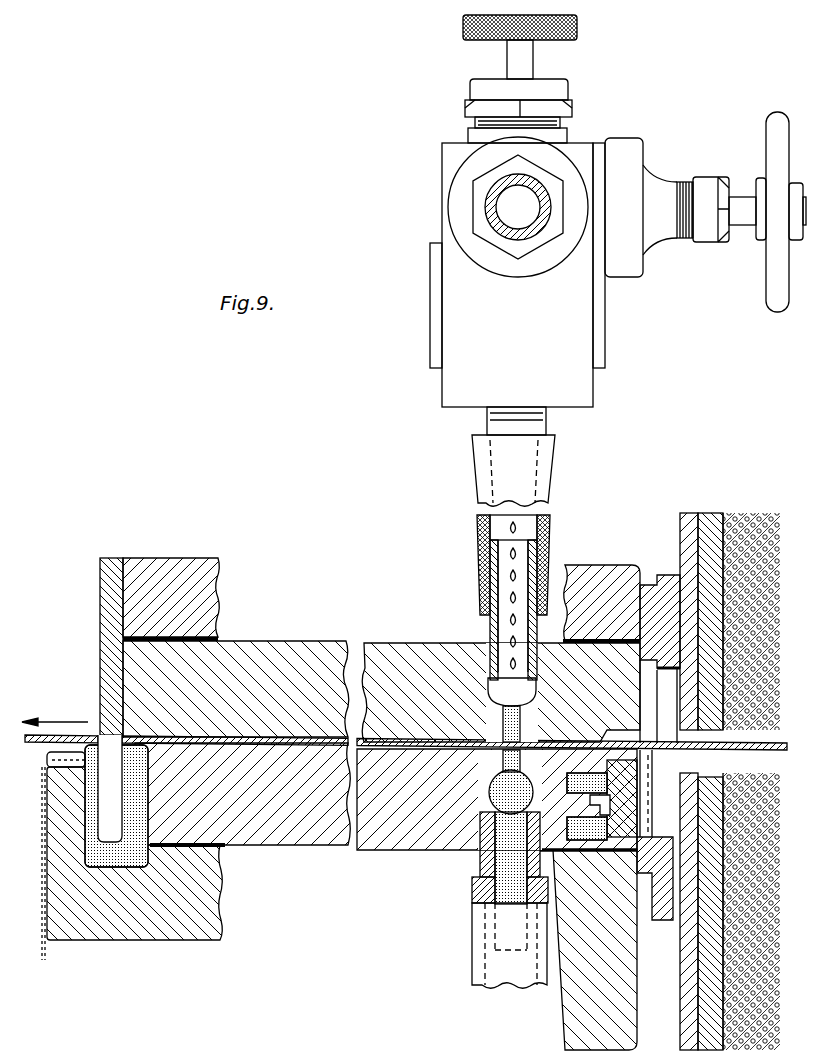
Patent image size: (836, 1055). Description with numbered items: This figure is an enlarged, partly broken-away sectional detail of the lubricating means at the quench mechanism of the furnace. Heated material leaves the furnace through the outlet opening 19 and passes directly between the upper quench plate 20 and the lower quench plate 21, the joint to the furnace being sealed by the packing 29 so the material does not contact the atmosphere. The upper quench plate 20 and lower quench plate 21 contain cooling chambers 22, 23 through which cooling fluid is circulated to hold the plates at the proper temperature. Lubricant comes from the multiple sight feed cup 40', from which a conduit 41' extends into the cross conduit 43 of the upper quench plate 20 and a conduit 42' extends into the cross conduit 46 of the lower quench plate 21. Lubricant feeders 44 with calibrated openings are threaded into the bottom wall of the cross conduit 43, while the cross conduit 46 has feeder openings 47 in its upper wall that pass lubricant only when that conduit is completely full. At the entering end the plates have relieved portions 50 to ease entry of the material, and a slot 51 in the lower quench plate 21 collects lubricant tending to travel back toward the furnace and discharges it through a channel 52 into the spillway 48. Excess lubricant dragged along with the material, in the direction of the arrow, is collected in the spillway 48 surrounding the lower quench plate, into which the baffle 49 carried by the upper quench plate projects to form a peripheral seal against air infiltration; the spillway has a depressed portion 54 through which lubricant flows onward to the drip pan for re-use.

The outlet opening 19 is at (768, 773).
The upper quench plate 20 is at (282, 652).
The lower quench plate 21 is at (300, 832).
The cooling chamber 22 is at (218, 577).
The cooling chamber 23 is at (220, 920).
The packing 29 is at (648, 583).
The multiple sight feed cup 40' is at (618, 225).
The conduit 41' is at (535, 470).
The conduit 42' is at (481, 945).
The cross conduit 43 is at (527, 693).
The lubricant feeder 44 is at (520, 722).
The cross conduit 46 is at (468, 822).
The feeder opening 47 is at (432, 840).
The spillway 48 is at (125, 866).
The baffle 49 is at (105, 808).
The relieved portion 50 is at (625, 740).
The slot 51 is at (613, 770).
The channel 52 is at (602, 806).
The depressed portion 54 is at (62, 765).